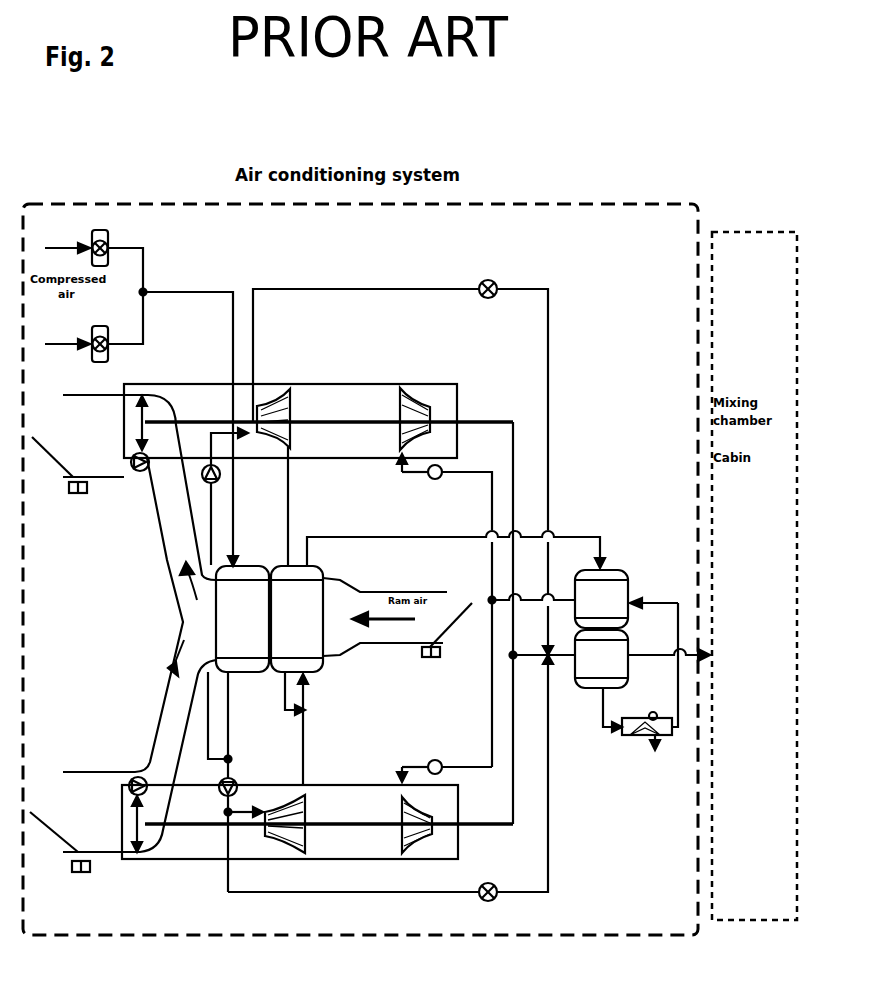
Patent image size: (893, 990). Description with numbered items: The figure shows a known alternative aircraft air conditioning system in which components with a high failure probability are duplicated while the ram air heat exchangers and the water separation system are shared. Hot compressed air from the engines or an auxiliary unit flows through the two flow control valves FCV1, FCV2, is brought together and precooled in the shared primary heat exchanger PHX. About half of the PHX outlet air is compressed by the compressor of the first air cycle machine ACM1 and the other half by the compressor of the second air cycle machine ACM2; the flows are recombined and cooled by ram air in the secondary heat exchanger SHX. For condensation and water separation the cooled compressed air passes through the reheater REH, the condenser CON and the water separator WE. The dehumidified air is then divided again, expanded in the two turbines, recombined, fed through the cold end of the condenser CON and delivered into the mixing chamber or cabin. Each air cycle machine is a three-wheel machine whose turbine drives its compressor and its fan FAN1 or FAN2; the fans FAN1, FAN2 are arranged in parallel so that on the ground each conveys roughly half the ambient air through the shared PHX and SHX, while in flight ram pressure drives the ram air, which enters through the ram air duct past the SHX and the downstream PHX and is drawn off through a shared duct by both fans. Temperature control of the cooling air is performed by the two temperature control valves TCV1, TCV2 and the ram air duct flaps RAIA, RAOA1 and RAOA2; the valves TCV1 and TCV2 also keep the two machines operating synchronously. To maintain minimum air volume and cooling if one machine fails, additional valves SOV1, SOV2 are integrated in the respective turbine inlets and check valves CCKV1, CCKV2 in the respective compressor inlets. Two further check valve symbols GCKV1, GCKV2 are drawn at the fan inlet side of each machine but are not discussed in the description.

The flow control valve FCV1 is at (94, 261).
The flow control valve FCV2 is at (94, 327).
The temperature control valve TCV1 is at (400, 399).
The temperature control valve TCV2 is at (388, 781).
The fan FAN1 is at (260, 414).
The fan FAN2 is at (290, 831).
The air cycle machine ACM1 is at (329, 476).
The air cycle machine ACM2 is at (329, 824).
The check valve CCKV1 is at (232, 496).
The check valve CCKV2 is at (246, 832).
The ground check valve 1 GCKV1 is at (126, 473).
The ground check valve 2 GCKV2 is at (123, 778).
The valve SOV1 is at (444, 492).
The valve SOV2 is at (444, 765).
The ram air duct flap RAOA1 is at (78, 473).
The ram air duct flap RAOA2 is at (63, 851).
The ram air duct flap RAIA is at (443, 639).
The primary heat exchanger PHX is at (242, 619).
The secondary heat exchanger SHX is at (297, 619).
The reheater REH is at (626, 599).
The condenser CON is at (601, 659).
The water separator WE is at (640, 676).